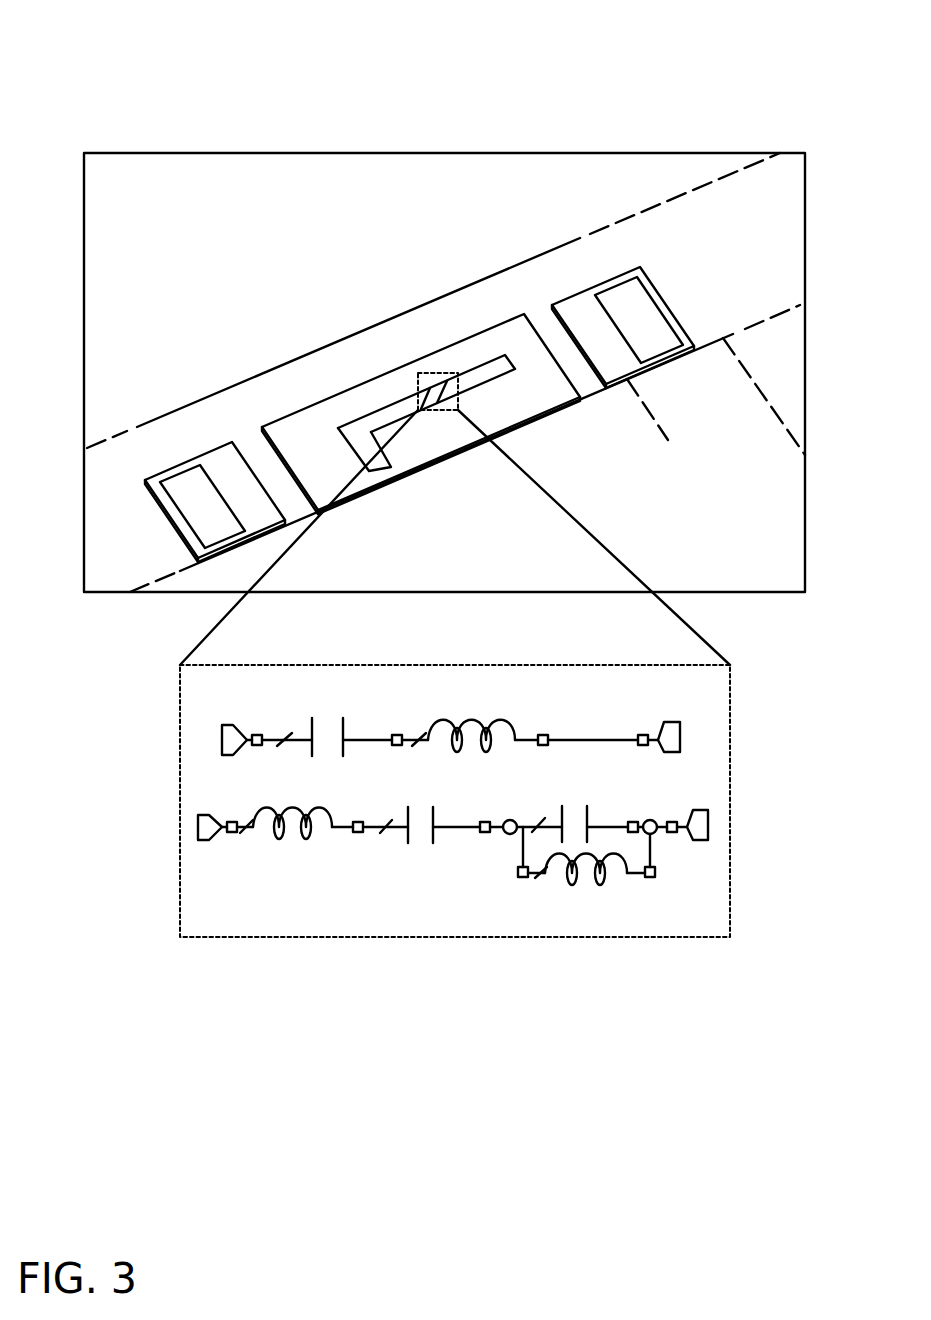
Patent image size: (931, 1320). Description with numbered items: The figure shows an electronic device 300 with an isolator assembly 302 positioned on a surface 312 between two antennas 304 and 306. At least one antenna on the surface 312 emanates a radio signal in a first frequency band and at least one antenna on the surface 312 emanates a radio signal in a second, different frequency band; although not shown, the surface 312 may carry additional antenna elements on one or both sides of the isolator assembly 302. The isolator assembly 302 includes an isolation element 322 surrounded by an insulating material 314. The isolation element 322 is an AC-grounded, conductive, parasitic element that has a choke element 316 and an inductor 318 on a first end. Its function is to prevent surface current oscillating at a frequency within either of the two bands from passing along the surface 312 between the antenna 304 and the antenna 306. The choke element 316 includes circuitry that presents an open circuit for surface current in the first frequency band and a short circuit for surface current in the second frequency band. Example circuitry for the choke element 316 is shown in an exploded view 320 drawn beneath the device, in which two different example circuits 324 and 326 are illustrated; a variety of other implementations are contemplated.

The electronic device 300 is at (104, 43).
The isolator assembly 302 is at (355, 401).
The antenna 304 is at (227, 443).
The antenna 306 is at (598, 287).
The surface 312 is at (478, 312).
The insulating material 314 is at (453, 357).
The choke element 316 is at (442, 398).
The inductor 318 is at (340, 430).
The exploded view 320 is at (180, 725).
The isolation element 322 is at (390, 413).
The example circuit 324 is at (660, 733).
The example circuit 326 is at (693, 818).